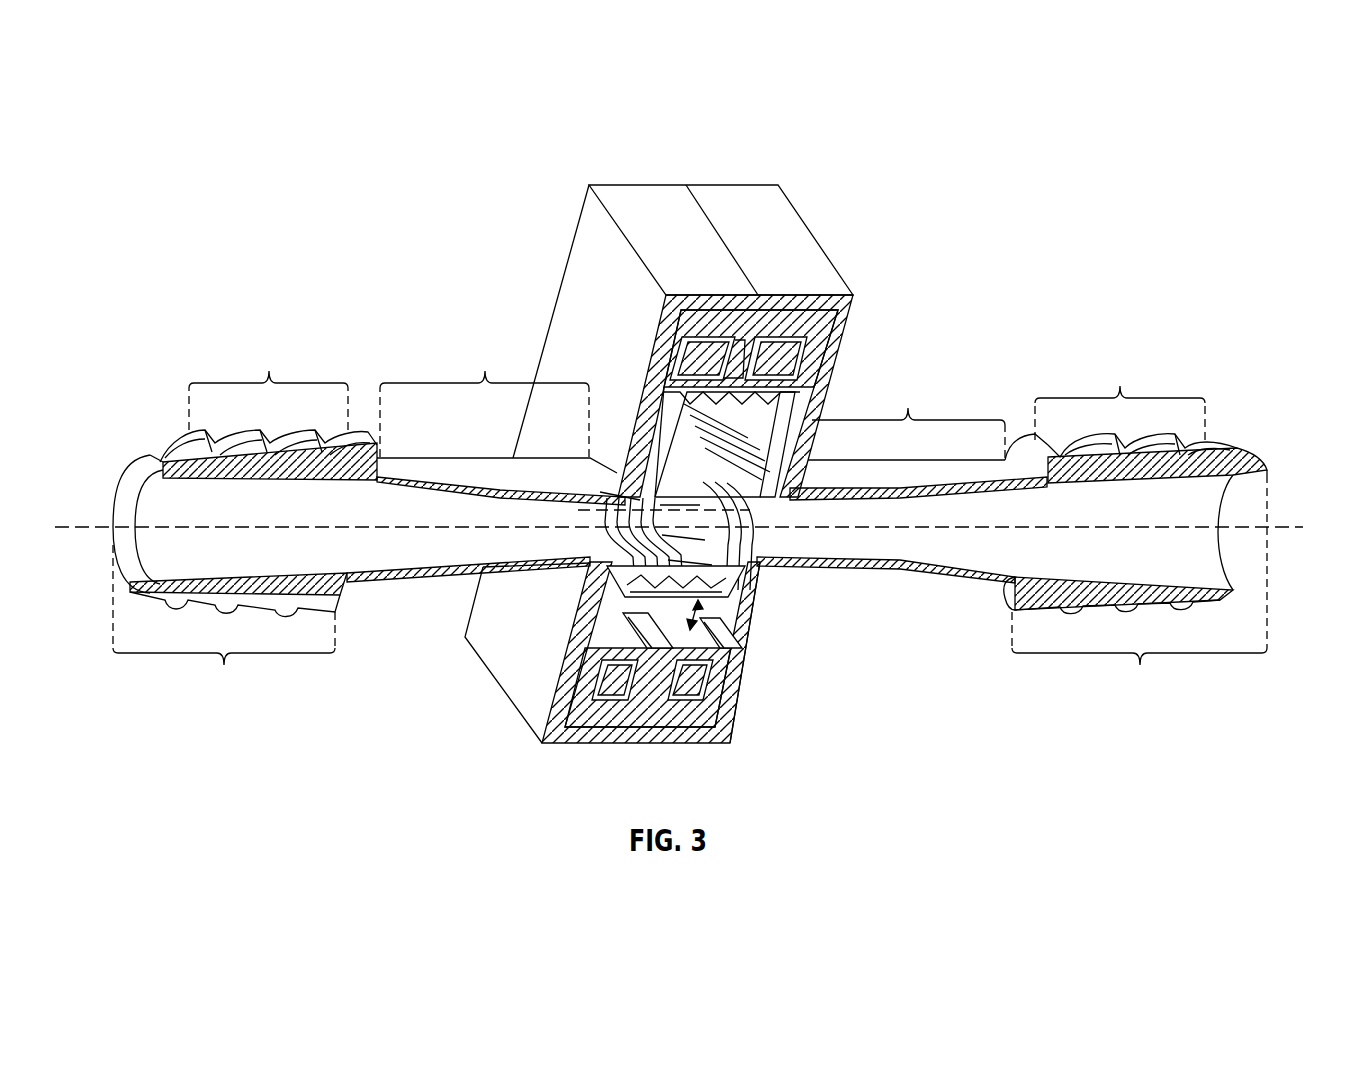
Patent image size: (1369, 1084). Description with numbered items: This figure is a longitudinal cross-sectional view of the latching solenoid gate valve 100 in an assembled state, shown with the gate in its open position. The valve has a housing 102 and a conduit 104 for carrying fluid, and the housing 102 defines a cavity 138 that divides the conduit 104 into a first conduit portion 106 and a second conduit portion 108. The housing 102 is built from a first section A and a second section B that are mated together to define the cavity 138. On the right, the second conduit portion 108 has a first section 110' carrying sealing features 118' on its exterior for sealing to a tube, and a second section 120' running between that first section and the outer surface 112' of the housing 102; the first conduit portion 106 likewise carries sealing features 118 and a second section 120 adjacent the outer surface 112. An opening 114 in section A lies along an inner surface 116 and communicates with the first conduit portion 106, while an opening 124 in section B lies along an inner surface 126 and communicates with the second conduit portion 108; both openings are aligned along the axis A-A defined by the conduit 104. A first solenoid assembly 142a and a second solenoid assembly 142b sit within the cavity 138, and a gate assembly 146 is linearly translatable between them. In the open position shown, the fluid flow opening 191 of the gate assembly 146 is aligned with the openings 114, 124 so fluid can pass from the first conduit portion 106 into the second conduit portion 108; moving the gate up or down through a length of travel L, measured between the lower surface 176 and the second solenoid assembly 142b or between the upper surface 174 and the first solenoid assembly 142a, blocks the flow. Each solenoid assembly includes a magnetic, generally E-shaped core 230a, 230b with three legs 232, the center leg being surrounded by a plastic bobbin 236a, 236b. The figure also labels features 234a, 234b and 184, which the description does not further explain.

The latching solenoid gate valve 100 is at (702, 473).
The housing 102 is at (716, 486).
The conduit 104 is at (702, 524).
The first conduit portion 106 is at (690, 524).
The second conduit portion 108 is at (1151, 484).
The first section 110' is at (690, 591).
The outer surface 112 is at (548, 321).
The outer surface 112' is at (780, 652).
The opening 114 is at (612, 532).
The inner surface 116 is at (673, 596).
The sealing features 118 is at (268, 401).
The sealing features 118' is at (1136, 405).
The second section 120 is at (484, 399).
The second section 120' is at (908, 417).
The opening 124 is at (733, 513).
The inner surface 126 is at (722, 620).
The cavity 138 is at (663, 397).
The first solenoid assembly 142a is at (831, 338).
The second solenoid assembly 142b is at (731, 694).
The gate assembly 146 is at (765, 438).
The upper surface 174 is at (670, 358).
The lower surface 176 is at (635, 600).
The lower pinch plate 184 is at (732, 578).
The fluid flow opening 191 is at (640, 487).
The core 230a is at (792, 302).
The core 230b is at (713, 743).
The legs 232 is at (726, 302).
The upper slot 234a is at (678, 338).
The lower slot 234b is at (597, 743).
The bobbin 236a is at (815, 353).
The bobbin 236b is at (612, 632).
The first section A is at (513, 692).
The second section B is at (735, 730).
The length of travel L is at (737, 637).
The axis A-A is at (1280, 523).